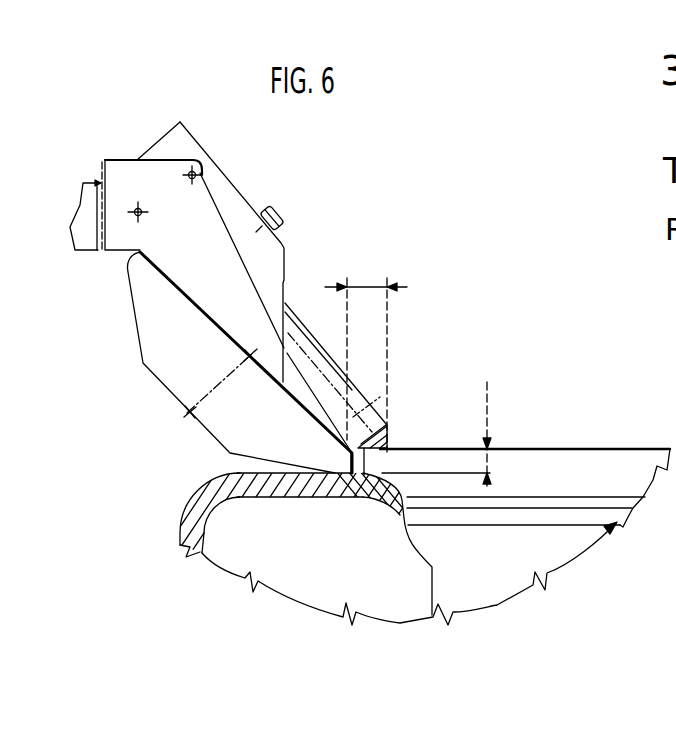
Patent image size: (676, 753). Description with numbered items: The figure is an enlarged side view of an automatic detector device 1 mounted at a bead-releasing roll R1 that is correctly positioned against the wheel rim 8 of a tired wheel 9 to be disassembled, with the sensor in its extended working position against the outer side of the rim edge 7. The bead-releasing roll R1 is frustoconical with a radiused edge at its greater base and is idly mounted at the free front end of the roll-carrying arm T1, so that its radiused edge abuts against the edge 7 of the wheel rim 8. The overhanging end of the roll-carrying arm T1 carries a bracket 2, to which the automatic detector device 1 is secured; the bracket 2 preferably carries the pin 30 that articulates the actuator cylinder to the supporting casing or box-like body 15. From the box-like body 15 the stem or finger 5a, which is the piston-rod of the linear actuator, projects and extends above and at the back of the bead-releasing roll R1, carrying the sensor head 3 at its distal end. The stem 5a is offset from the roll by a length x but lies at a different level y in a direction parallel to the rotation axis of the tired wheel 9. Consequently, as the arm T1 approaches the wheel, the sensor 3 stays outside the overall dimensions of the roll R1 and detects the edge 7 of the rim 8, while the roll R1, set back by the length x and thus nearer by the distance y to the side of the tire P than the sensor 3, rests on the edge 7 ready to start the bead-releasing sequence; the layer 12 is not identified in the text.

The automatic detector device 1 is at (308, 196).
The bracket 2 is at (140, 177).
The pin 30 is at (138, 209).
The roll-carrying arm T1 is at (93, 245).
The box-like body 15 is at (280, 248).
The rod-shaped member or finger 5a is at (335, 368).
The length X x is at (366, 352).
The sensor head 3 is at (387, 432).
The edge of the wheel rim 7 is at (387, 458).
The level Y y is at (478, 387).
The wheel rim 8 is at (467, 592).
The tire P is at (322, 583).
The tired wheel 9 is at (400, 618).
The layer 12 is at (540, 513).
The bead-releasing roll R1 is at (157, 349).